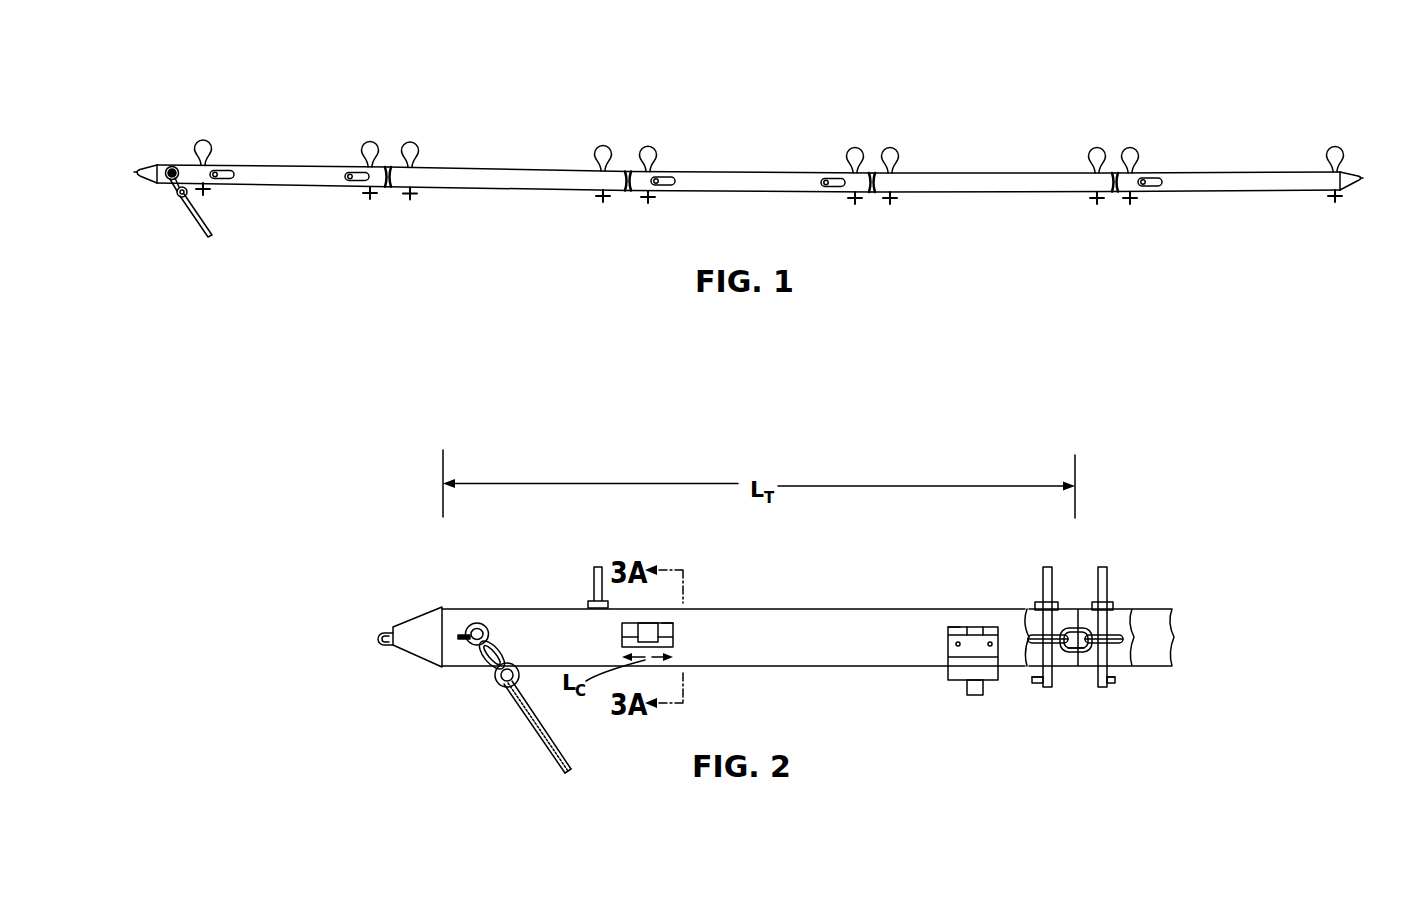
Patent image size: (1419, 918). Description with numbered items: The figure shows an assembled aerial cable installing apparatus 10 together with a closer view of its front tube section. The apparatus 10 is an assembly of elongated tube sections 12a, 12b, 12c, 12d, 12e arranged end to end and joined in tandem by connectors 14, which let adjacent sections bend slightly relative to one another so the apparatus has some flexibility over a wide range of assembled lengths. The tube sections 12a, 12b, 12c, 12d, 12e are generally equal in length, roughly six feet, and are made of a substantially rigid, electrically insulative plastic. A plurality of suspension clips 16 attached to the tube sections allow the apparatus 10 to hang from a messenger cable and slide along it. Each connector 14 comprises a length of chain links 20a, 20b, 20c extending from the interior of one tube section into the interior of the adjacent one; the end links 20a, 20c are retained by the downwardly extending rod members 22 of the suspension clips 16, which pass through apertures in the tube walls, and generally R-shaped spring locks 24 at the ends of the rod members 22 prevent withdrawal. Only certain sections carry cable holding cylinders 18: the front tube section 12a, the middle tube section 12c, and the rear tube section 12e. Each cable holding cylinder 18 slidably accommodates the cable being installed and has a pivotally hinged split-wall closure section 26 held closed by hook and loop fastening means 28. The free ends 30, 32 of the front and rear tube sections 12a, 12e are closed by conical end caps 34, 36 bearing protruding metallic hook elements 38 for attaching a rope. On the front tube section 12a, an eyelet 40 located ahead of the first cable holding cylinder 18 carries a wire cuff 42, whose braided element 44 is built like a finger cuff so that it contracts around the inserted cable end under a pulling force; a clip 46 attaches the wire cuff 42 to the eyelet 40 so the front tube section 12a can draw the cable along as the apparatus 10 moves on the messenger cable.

In FIG. 1, the aerial cable installing apparatus 10 is at (748, 112).
In FIG. 1, the front tube section 12a is at (290, 187).
In FIG. 2, the front tube section 12a is at (817, 609).
In FIG. 1, the tube section 12b is at (484, 191).
In FIG. 2, the tube section 12b is at (1152, 609).
In FIG. 1, the middle tube section 12c is at (745, 192).
In FIG. 1, the tube section 12d is at (990, 192).
In FIG. 1, the rear tube section 12e is at (1250, 191).
In FIG. 1, the connector 14 is at (388, 188).
In FIG. 2, the connector 14 is at (1073, 629).
In FIG. 1, the suspension clip 16 is at (206, 142).
In FIG. 2, the suspension clip 16 is at (596, 577).
In FIG. 1, the cable holding cylinder 18 is at (223, 180).
In FIG. 2, the cable holding cylinder 18 is at (674, 621).
In FIG. 2, the end chain link 20a is at (1049, 644).
In FIG. 2, the chain link 20b is at (1076, 653).
In FIG. 2, the end chain link 20c is at (1116, 636).
In FIG. 2, the rod member 22 is at (1040, 630).
In FIG. 2, the spring lock 24 is at (1036, 682).
In FIG. 2, the closure section 26 is at (675, 636).
In FIG. 2, the hook and loop fastening means 28 is at (646, 625).
In FIG. 1, the free end of front tube section 30 is at (141, 160).
In FIG. 1, the free end of rear tube section 32 is at (1362, 164).
In FIG. 1, the end cap 34 is at (160, 180).
In FIG. 1, the end cap 36 is at (1350, 191).
In FIG. 1, the hook element 38 is at (134, 173).
In FIG. 2, the eyelet 40 is at (466, 629).
In FIG. 2, the wire cuff 42 is at (550, 715).
In FIG. 2, the braided element 44 is at (569, 770).
In FIG. 2, the clip 46 is at (482, 653).